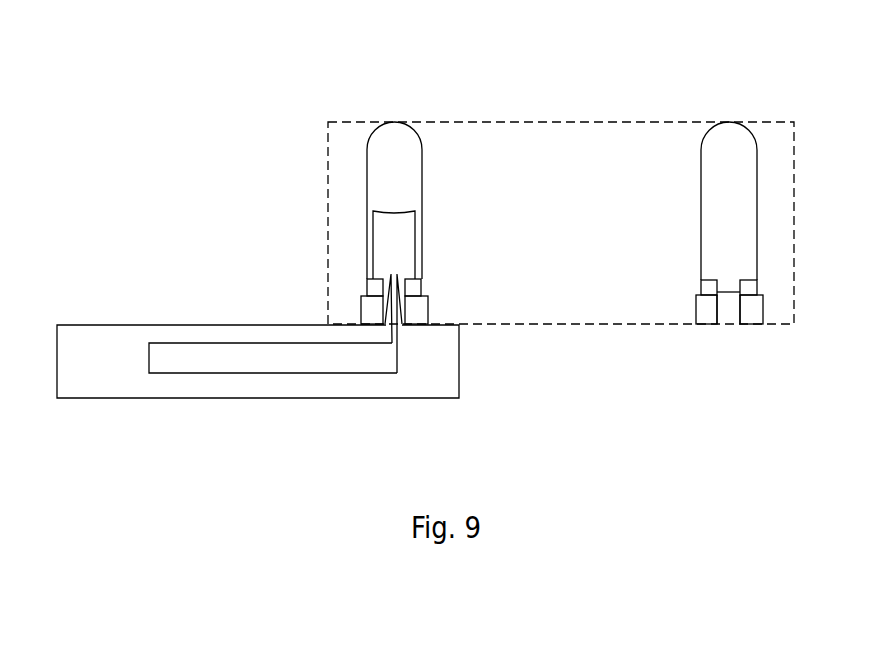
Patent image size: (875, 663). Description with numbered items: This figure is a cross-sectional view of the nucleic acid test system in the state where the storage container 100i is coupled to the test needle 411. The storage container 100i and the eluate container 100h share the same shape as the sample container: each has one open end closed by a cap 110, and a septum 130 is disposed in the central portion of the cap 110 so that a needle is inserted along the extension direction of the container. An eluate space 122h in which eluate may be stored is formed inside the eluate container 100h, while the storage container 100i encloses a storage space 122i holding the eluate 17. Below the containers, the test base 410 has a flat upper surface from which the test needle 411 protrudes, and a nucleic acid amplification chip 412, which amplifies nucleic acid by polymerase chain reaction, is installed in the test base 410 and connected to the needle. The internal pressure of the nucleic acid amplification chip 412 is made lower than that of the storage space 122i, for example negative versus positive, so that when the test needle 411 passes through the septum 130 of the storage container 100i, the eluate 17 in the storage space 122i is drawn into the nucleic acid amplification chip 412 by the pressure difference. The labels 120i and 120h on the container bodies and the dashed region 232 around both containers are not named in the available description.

The storage container 100i is at (397, 104).
The eluate container 100h is at (731, 104).
The sensor region 232 is at (567, 121).
The housing tube of probe 100i 120i is at (366, 184).
The storage space 122i is at (408, 191).
The housing tube of probe 100h 120h is at (760, 183).
The eluate space 122h is at (708, 206).
The eluate 17 is at (403, 241).
The septum 130 is at (387, 296).
The cap 110 is at (366, 313).
The test needle 411 is at (403, 307).
The test base 410 is at (113, 380).
The nucleic acid amplification chip 412 is at (248, 362).